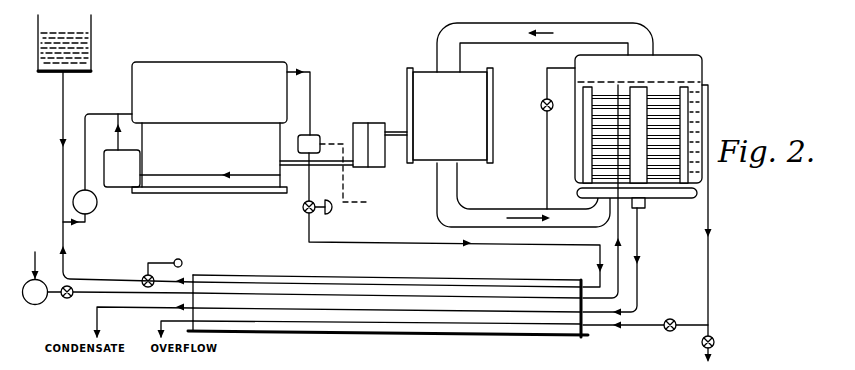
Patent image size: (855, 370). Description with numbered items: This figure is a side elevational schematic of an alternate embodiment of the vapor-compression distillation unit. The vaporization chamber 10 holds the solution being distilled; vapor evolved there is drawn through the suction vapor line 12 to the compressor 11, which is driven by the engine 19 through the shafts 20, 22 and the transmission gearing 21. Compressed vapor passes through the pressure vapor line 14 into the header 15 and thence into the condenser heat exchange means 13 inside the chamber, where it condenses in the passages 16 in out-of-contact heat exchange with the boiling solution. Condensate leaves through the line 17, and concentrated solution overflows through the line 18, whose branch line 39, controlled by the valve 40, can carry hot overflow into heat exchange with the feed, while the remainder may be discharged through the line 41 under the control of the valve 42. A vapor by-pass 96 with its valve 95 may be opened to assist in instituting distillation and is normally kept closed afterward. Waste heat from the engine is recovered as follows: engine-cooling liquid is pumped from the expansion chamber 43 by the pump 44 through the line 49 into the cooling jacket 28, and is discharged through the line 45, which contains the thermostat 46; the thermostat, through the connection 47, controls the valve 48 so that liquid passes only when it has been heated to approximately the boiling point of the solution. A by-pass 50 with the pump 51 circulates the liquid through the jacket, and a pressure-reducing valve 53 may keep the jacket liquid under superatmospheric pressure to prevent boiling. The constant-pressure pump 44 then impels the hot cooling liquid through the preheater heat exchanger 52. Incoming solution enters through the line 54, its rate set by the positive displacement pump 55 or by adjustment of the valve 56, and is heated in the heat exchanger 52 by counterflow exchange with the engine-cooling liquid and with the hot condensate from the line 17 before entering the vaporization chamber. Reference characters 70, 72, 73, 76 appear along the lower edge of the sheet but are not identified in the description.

The vaporization chamber 10 is at (702, 67).
The compressor 11 is at (478, 135).
The suction vapor line 12 is at (447, 33).
The condenser heat exchange means 13 is at (685, 118).
The pressure vapor line 14 is at (452, 187).
The header 15 is at (577, 193).
The passages 16 is at (666, 95).
The line 17 is at (640, 230).
The overflow line 18 is at (709, 213).
The engine 19 is at (209, 158).
The shaft 20 is at (333, 163).
The transmission gearing 21 is at (363, 130).
The shaft 22 is at (395, 128).
The cooling jacket 28 is at (207, 73).
The branch line 39 is at (646, 328).
The valve 40 is at (672, 318).
The line 41 is at (715, 355).
The valve 42 is at (716, 340).
The expansion chamber 43 is at (92, 42).
The pump 44 is at (97, 207).
The line 45 is at (313, 86).
The thermostat 46 is at (318, 134).
The connection 47 is at (357, 178).
The valve 48 is at (303, 210).
The line 49 is at (105, 113).
The by-pass 50 is at (210, 178).
The pump 51 is at (133, 163).
The preheater heat exchanger 52 is at (265, 275).
The pressure-reducing valve 53 is at (143, 277).
The line 54 is at (40, 257).
The positive displacement pump 55 is at (36, 305).
The valve 56 is at (66, 300).
The pipe 70 is at (264, 364).
The pipe 72 is at (314, 364).
The pipe 73 is at (389, 364).
The pipe 76 is at (342, 364).
The valve 95 is at (548, 112).
The vapor by-pass 96 is at (546, 77).